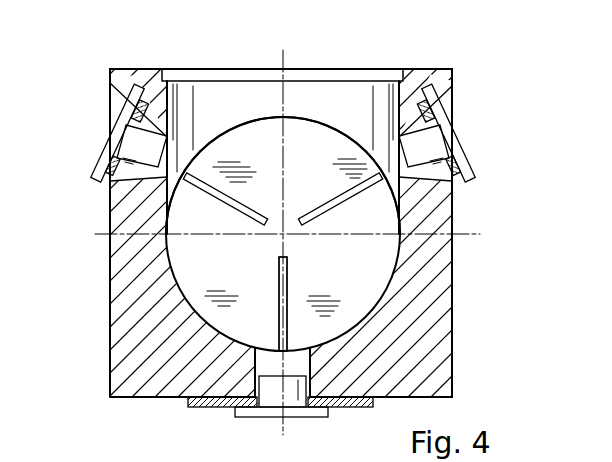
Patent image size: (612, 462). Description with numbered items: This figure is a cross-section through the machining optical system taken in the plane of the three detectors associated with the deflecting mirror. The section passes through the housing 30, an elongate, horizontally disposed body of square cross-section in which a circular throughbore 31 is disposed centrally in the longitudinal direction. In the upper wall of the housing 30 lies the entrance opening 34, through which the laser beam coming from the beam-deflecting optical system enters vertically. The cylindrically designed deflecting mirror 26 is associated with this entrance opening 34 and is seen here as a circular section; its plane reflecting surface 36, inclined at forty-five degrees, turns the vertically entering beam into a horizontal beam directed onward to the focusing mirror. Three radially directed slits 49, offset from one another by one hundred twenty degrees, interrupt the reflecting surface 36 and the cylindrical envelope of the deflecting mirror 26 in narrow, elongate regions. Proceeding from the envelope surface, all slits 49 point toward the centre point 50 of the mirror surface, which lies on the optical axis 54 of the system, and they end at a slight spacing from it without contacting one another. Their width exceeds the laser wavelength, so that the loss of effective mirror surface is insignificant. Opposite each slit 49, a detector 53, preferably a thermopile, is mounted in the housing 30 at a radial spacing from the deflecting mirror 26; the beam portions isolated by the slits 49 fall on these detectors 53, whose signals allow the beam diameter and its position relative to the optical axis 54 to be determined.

The deflecting mirror 26 is at (238, 327).
The housing 30 is at (143, 78).
The throughbore 31 is at (252, 118).
The entrance opening 34 is at (205, 90).
The plane reflecting surface 36 is at (190, 264).
The slits 49 is at (317, 210).
The centre point 50 is at (293, 237).
The detector 53 is at (128, 143).
The optical axis 54 is at (283, 304).